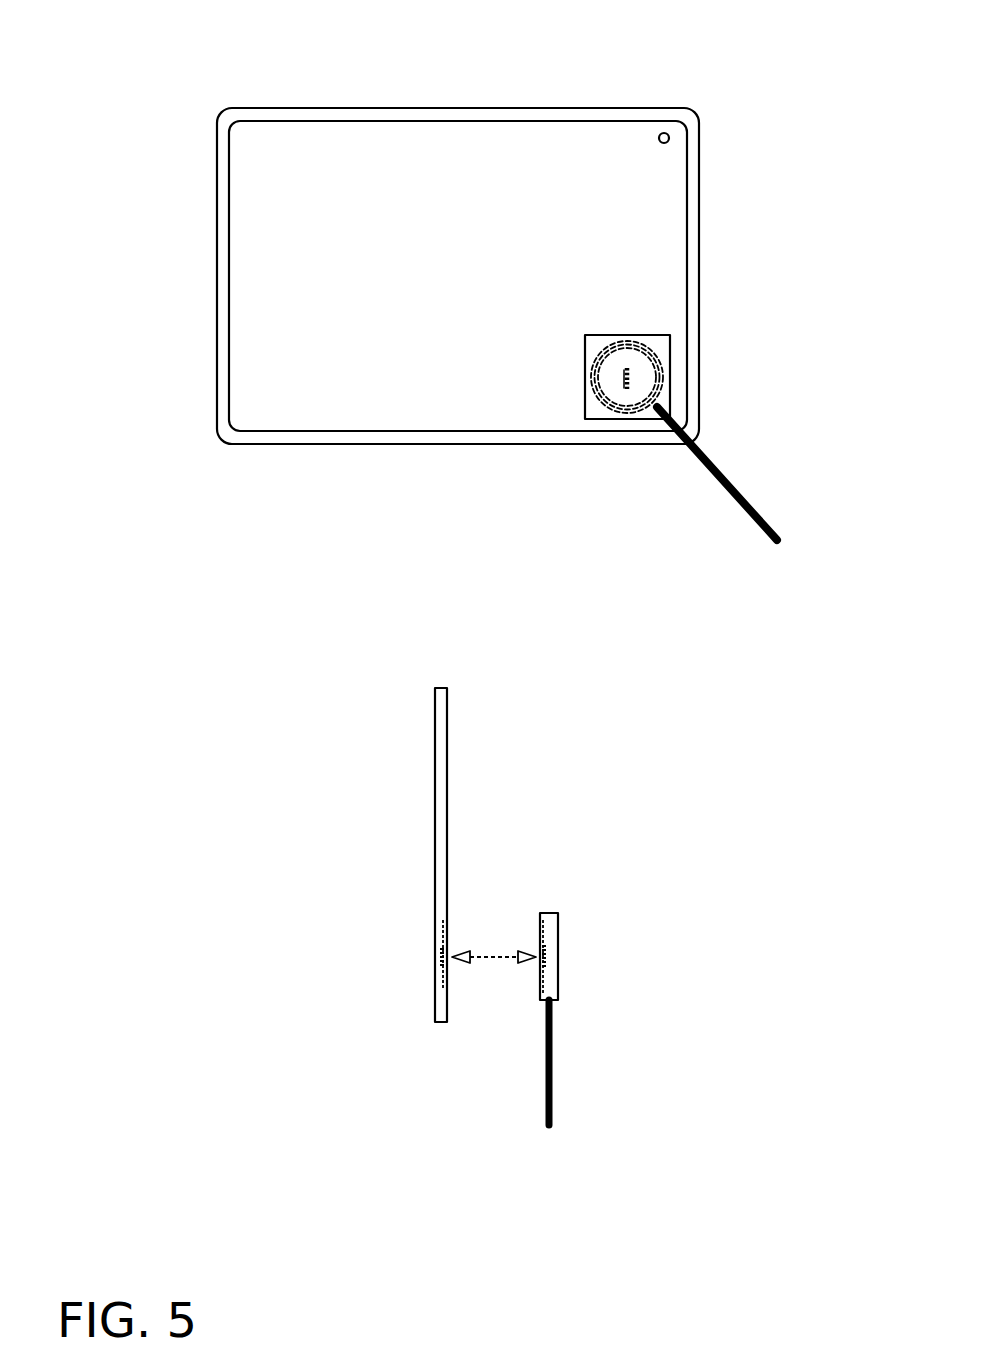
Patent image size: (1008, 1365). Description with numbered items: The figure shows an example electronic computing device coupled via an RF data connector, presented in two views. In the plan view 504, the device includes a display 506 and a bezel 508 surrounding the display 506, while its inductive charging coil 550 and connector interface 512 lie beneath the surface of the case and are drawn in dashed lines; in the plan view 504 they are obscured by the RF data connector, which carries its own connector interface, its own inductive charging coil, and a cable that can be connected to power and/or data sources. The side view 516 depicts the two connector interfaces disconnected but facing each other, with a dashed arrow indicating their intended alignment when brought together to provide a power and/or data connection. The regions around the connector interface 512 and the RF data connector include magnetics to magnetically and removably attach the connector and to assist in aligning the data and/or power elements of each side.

The plan view 504 is at (166, 49).
The display 506 is at (247, 303).
The bezel 508 is at (223, 393).
The side view 516 is at (199, 683).
The connector interface 512 is at (440, 942).
The inductive charging coil 550 is at (448, 920).